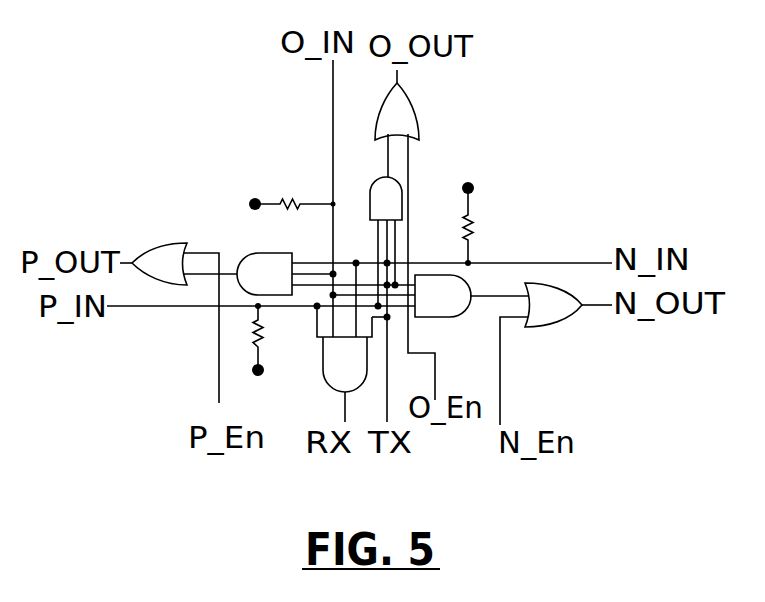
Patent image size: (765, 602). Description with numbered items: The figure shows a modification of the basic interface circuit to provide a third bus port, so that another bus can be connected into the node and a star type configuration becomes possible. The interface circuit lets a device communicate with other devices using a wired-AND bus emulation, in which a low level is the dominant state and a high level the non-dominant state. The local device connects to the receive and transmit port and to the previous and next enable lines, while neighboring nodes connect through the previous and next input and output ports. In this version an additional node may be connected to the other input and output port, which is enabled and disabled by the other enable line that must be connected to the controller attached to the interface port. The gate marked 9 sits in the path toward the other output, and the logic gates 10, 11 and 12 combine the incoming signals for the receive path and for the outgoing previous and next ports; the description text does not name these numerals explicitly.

The buffer gate 9 is at (397, 216).
The receive AND gate 10 is at (323, 376).
The next-port AND gate 11 is at (462, 314).
The previous-port AND gate 12 is at (275, 253).